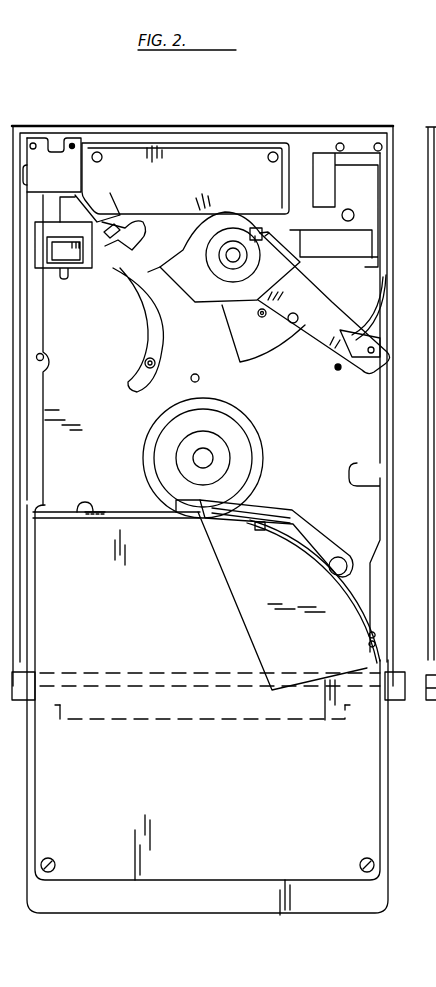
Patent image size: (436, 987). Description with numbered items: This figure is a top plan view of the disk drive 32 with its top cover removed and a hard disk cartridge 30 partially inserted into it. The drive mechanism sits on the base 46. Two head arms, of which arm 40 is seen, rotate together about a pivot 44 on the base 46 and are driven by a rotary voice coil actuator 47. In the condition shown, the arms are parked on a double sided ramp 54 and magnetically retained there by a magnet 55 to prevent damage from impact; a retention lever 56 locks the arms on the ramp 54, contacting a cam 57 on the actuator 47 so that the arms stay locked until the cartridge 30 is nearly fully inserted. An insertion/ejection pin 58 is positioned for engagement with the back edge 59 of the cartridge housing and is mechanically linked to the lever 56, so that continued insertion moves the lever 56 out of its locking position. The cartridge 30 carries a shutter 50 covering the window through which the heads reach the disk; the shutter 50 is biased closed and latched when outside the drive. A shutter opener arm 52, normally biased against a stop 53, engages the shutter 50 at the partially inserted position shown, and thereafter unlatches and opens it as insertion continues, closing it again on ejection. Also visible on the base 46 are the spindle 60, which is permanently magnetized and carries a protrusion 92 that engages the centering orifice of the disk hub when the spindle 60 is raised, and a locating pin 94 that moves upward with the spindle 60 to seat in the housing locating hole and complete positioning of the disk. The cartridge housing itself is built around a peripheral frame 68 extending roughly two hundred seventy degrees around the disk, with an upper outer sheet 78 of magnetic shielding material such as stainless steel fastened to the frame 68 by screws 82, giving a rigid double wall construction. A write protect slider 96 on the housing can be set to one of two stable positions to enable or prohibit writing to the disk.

The hard disk cartridge 30 is at (145, 915).
The disk drive 32 is at (268, 124).
The arm 40 is at (322, 344).
The pivot 44 is at (233, 250).
The base 46 is at (120, 422).
The rotary voice coil actuator 47 is at (194, 230).
The shutter 50 is at (245, 580).
The shutter opener arm 52 is at (300, 503).
The stop 53 is at (218, 547).
The double sided ramp 54 is at (338, 370).
The magnet 55 is at (129, 226).
The retention lever 56 is at (264, 236).
The cam 57 is at (255, 228).
The insertion/ejection pin 58 is at (146, 362).
The back edge 59 is at (123, 505).
The spindle 60 is at (228, 428).
The peripheral frame 68 is at (347, 905).
The upper outer sheet 78 is at (372, 720).
The screws 82 is at (372, 862).
The protrusion 92 is at (212, 458).
The locating pin 94 is at (200, 377).
The write protect slider 96 is at (78, 514).